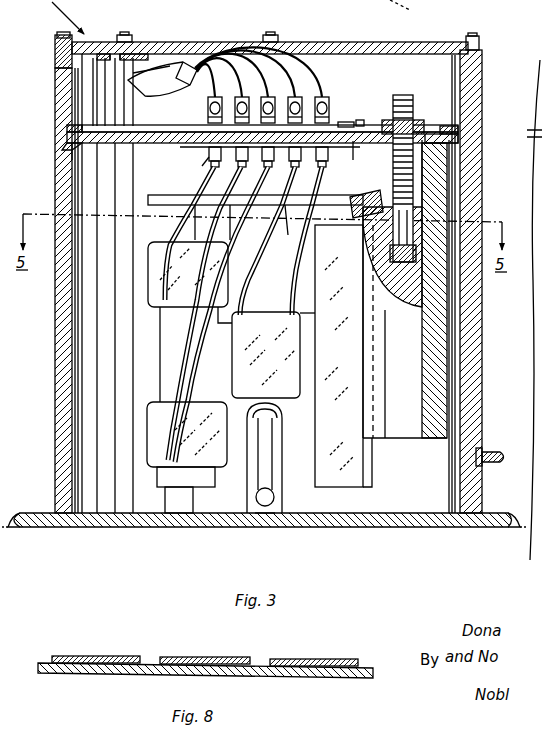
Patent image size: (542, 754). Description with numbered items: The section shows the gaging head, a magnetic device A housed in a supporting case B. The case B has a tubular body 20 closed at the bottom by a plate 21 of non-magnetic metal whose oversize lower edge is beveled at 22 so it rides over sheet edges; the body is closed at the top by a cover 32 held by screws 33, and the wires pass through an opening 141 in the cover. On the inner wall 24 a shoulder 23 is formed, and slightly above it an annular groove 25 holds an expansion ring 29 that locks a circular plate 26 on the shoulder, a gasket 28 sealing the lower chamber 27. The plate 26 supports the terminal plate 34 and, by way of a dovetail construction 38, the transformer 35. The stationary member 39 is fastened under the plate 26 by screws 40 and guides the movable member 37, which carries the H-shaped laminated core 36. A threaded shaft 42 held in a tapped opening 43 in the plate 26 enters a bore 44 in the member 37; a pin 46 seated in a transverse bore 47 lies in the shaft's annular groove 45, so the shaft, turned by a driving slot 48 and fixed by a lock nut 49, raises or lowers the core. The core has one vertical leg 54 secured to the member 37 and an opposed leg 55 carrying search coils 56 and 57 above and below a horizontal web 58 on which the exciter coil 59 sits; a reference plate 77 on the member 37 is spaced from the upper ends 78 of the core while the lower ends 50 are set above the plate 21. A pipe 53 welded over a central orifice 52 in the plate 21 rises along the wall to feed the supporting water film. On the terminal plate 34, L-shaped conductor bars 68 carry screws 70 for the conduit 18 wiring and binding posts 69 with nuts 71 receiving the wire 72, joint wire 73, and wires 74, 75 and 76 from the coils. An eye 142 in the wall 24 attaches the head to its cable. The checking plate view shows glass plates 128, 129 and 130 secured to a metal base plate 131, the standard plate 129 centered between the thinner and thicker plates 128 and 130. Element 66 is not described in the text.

In FIG. 3, the flexible conduit 18 is at (150, 85).
In FIG. 3, the tubular body 20 is at (67, 108).
In FIG. 3, the plate 21 is at (87, 520).
In FIG. 3, the beveled edge 22 is at (14, 526).
In FIG. 3, the shoulder 23 is at (70, 150).
In FIG. 3, the wall 24 is at (64, 145).
In FIG. 3, the annular groove 25 is at (64, 128).
In FIG. 3, the circular plate 26 is at (357, 150).
In FIG. 3, the chamber 27 is at (120, 276).
In FIG. 3, the gasket 28 is at (85, 143).
In FIG. 3, the annular expansion ring 29 is at (136, 127).
In FIG. 3, the cover 32 is at (228, 42).
In FIG. 3, the screws 33 is at (128, 37).
In FIG. 3, the terminal plate 34 is at (356, 125).
In FIG. 3, the transformer 35 is at (150, 360).
In FIG. 3, the laminated core 36 is at (162, 360).
In FIG. 3, the movable member 37 is at (397, 415).
In FIG. 3, the dovetail construction 38 is at (470, 393).
In FIG. 3, the stationary member 39 is at (434, 360).
In FIG. 3, the screws 40 is at (470, 162).
In FIG. 3, the threaded shaft 42 is at (458, 141).
In FIG. 3, the tapped opening 43 is at (456, 130).
In FIG. 3, the bore 44 is at (450, 216).
In FIG. 3, the annular groove 45 is at (385, 255).
In FIG. 3, the pin 46 is at (453, 226).
In FIG. 3, the transverse bore 47 is at (462, 276).
In FIG. 3, the driving slot 48 is at (402, 95).
In FIG. 3, the lock nut 49 is at (420, 122).
In FIG. 3, the lower ends of the core 50 is at (188, 480).
In FIG. 3, the orifice 52 is at (262, 527).
In FIG. 3, the pipe 53 is at (278, 487).
In FIG. 3, the vertical leg 54 is at (350, 445).
In FIG. 3, the vertical leg 55 is at (205, 475).
In FIG. 3, the coil 56 is at (150, 318).
In FIG. 3, the coil 57 is at (155, 440).
In FIG. 3, the horizontal web 58 is at (307, 358).
In FIG. 3, the coil 59 is at (299, 392).
In FIG. 3, the base 66 is at (156, 527).
In FIG. 3, the conductor bars 68 is at (320, 120).
In FIG. 3, the binding posts 69 is at (259, 314).
In FIG. 3, the screws 70 is at (305, 100).
In FIG. 3, the nuts 71 is at (208, 158).
In FIG. 3, the wire 72 is at (205, 168).
In FIG. 3, the joint wire 73 is at (195, 270).
In FIG. 3, the wire 74 is at (223, 282).
In FIG. 3, the wire 75 is at (250, 280).
In FIG. 3, the wire 76 is at (292, 295).
In FIG. 3, the reference plate 77 is at (278, 228).
In FIG. 3, the upper ends of the core 78 is at (168, 240).
In FIG. 3, the opening 141 is at (116, 52).
In FIG. 3, the eye 142 is at (497, 452).
In FIG. 3, the magnetic device A is at (147, 355).
In FIG. 3, the supporting case B is at (353, 44).
In FIG. 8, the glass plate 128 is at (97, 656).
In FIG. 8, the glass plate 129 is at (195, 657).
In FIG. 8, the glass plate 130 is at (317, 660).
In FIG. 8, the metal base plate 131 is at (108, 672).